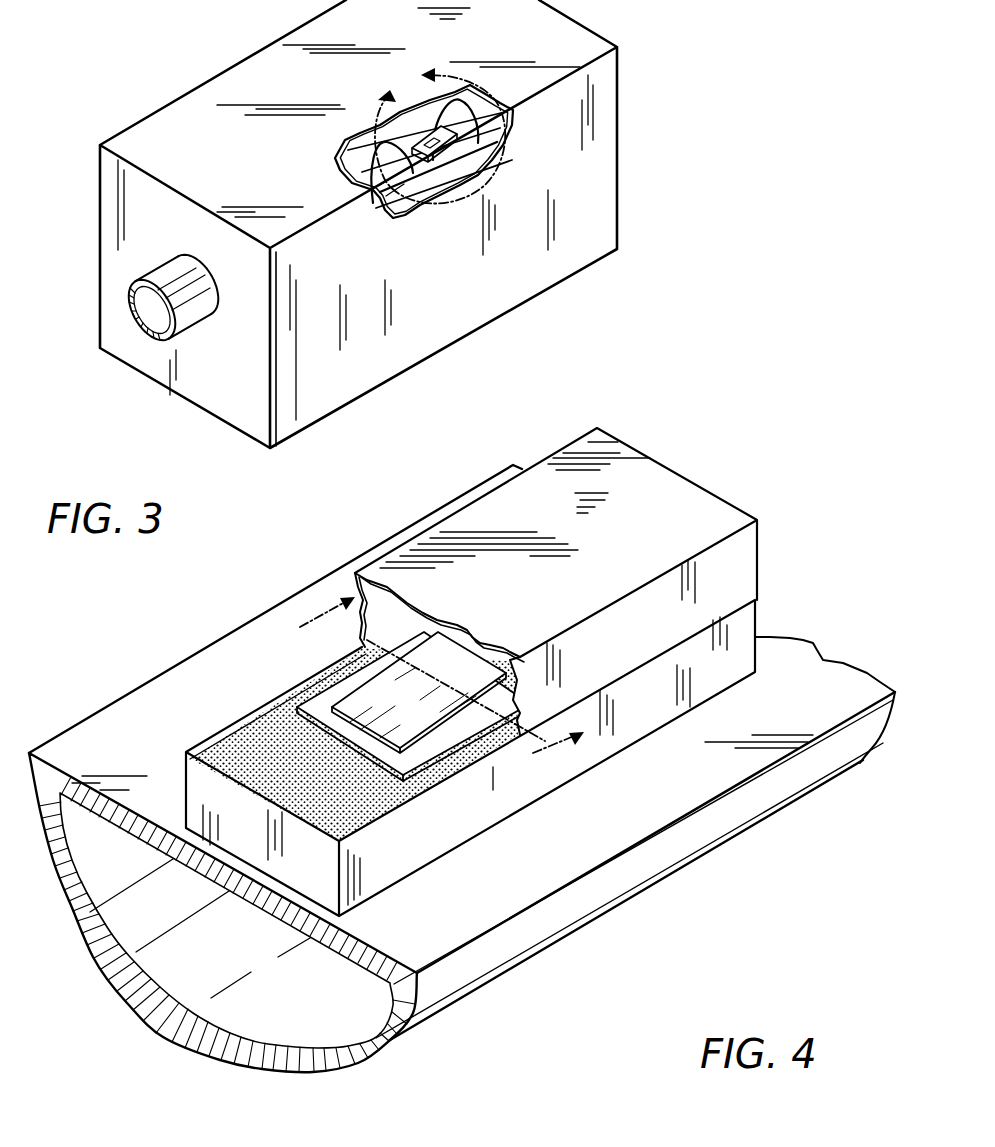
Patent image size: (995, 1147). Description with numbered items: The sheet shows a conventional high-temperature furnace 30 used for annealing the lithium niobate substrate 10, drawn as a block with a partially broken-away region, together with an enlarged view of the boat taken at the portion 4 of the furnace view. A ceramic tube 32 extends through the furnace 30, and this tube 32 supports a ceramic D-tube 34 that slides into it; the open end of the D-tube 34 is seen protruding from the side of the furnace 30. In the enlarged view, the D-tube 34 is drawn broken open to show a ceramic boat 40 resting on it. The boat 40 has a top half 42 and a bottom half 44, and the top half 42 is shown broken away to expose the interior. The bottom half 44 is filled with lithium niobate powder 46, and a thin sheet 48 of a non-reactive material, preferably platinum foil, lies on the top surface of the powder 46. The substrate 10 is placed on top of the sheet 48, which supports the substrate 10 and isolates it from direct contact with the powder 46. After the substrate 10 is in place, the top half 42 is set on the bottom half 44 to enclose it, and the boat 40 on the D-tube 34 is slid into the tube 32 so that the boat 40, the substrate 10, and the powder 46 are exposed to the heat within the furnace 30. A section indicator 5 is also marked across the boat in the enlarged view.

In FIG. 4, the lithium niobate substrate 10 is at (515, 660).
In FIG. 3, the furnace 30 is at (612, 205).
In FIG. 3, the ceramic tube 32 is at (190, 327).
In FIG. 4, the ceramic tube 32 is at (118, 748).
In FIG. 3, the ceramic D-tube 34 is at (133, 283).
In FIG. 3, the ceramic boat 40 is at (500, 117).
In FIG. 4, the ceramic boat 40 is at (479, 672).
In FIG. 4, the top half 42 is at (705, 492).
In FIG. 4, the bottom half 44 is at (742, 650).
In FIG. 4, the lithium niobate powder 46 is at (260, 710).
In FIG. 4, the sheet 48 is at (315, 677).
In FIG. 3, the portion 4 is at (440, 133).
In FIG. 4, the section line 5- 5 is at (442, 692).